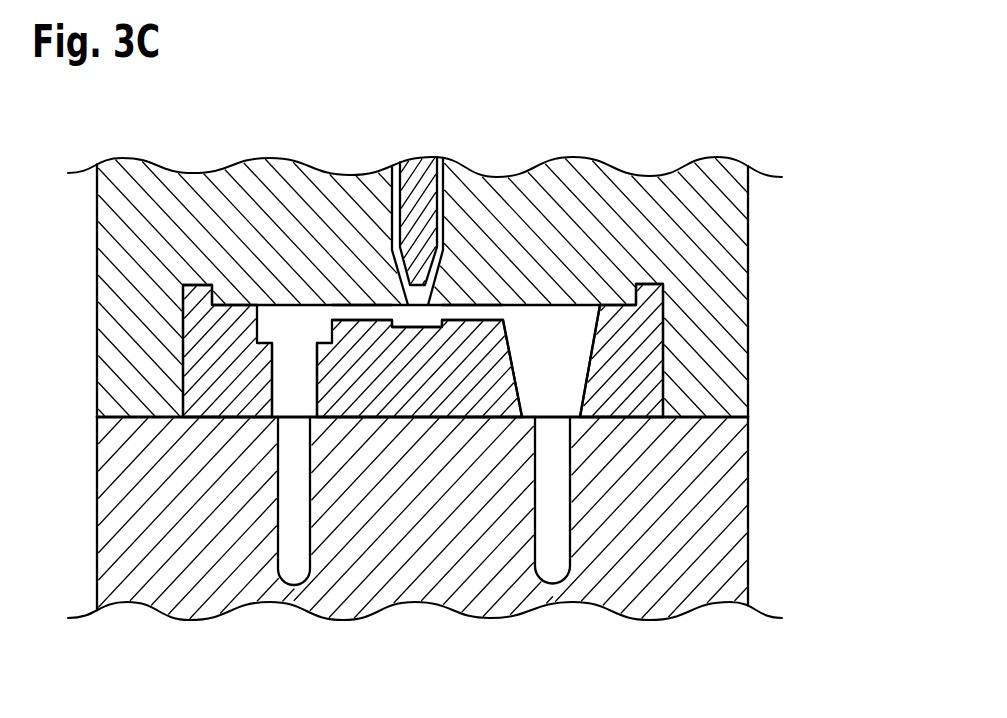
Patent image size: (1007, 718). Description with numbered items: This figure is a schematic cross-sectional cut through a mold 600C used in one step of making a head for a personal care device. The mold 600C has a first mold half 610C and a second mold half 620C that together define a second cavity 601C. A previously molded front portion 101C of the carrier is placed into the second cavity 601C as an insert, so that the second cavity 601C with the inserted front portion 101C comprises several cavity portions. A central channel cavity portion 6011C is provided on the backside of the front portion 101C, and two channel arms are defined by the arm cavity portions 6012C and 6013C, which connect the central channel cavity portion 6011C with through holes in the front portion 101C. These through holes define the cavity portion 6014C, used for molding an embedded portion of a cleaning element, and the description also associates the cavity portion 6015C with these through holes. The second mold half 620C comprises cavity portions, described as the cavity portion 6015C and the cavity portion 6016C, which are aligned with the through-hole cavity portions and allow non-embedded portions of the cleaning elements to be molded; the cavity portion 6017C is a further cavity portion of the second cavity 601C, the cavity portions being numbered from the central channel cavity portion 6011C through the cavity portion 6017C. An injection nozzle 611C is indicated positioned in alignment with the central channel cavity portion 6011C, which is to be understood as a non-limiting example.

The mold 600C is at (807, 124).
The first mold half 610C is at (748, 223).
The injection nozzle 611C is at (418, 195).
The second mold half 620C is at (748, 516).
The second cavity 601C is at (566, 365).
The front portion 101C is at (638, 328).
The cavity portion 6014C is at (293, 333).
The channel arm cavity portion 6012C is at (362, 312).
The central channel cavity portion 6011C is at (425, 325).
The channel arm cavity portion 6013C is at (475, 313).
The cavity portion 6016C is at (550, 337).
The cavity portion 6015C is at (297, 547).
The cavity portion 6017C is at (553, 543).